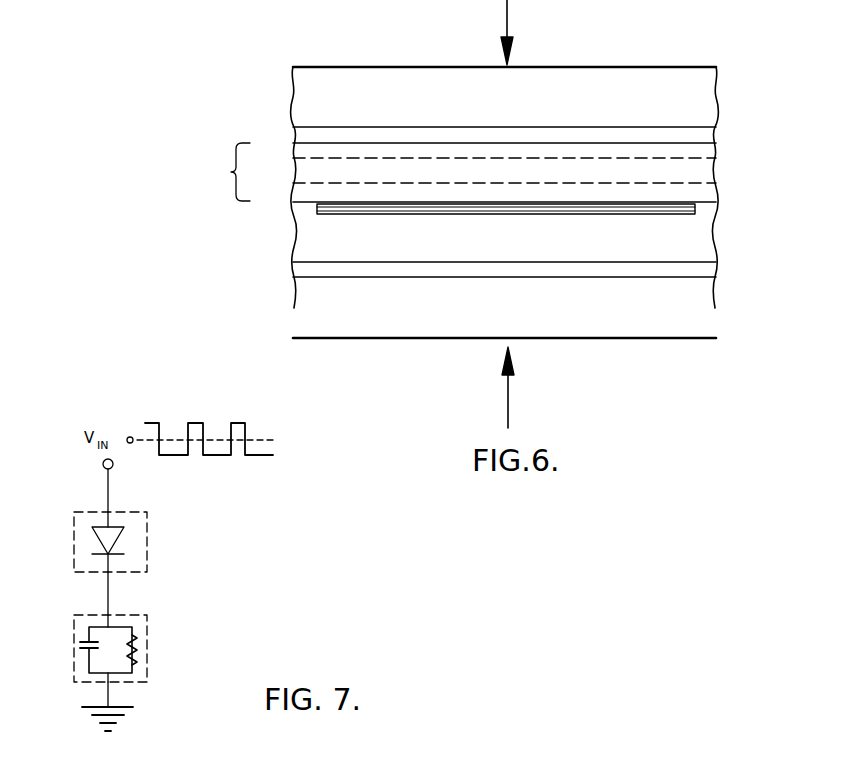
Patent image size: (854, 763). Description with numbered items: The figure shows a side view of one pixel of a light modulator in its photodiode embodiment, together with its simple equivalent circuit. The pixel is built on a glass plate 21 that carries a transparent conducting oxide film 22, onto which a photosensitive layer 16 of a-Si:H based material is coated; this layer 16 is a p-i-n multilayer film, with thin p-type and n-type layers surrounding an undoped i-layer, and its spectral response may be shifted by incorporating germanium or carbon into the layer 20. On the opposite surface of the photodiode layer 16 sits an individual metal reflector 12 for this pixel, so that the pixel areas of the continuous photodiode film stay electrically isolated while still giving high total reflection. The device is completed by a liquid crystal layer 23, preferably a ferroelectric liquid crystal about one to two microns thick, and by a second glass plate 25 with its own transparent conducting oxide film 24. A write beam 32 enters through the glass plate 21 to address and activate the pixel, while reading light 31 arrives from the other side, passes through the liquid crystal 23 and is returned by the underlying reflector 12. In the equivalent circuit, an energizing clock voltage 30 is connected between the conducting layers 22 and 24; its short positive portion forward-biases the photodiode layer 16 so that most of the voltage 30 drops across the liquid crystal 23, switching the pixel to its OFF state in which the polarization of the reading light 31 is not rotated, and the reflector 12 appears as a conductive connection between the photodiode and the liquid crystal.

In FIG. 6, the metal reflector 12 is at (635, 214).
In FIG. 7, the metal reflector 12 is at (108, 592).
In FIG. 6, the photosensitive layer 16 is at (231, 172).
In FIG. 7, the photosensitive layer 16 is at (147, 523).
In FIG. 6, the layer 20 is at (662, 172).
In FIG. 6, the glass plate 21 is at (353, 66).
In FIG. 6, the transparent conducting oxide film 22 is at (313, 136).
In FIG. 7, the transparent conducting oxide film 22 is at (114, 464).
In FIG. 6, the liquid crystal layer 23 is at (305, 237).
In FIG. 7, the liquid crystal layer 23 is at (148, 622).
In FIG. 6, the transparent conducting oxide film 24 is at (330, 268).
In FIG. 7, the transparent conducting oxide film 24 is at (108, 697).
In FIG. 6, the glass plate 25 is at (323, 317).
In FIG. 7, the energizing clock voltage 30 is at (263, 432).
In FIG. 6, the reading light 31 is at (507, 401).
In FIG. 6, the write beam 32 is at (505, 13).